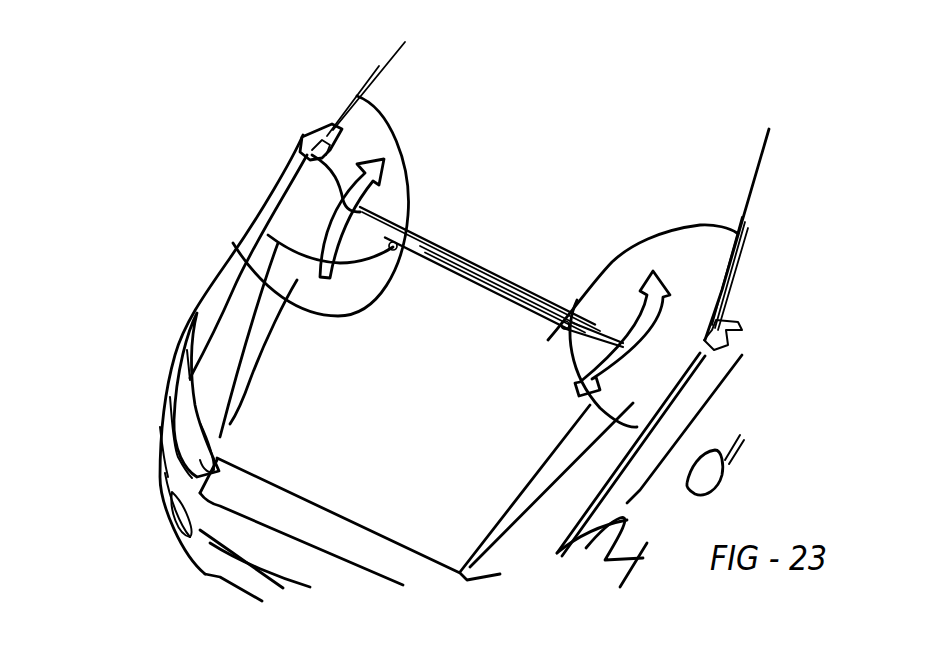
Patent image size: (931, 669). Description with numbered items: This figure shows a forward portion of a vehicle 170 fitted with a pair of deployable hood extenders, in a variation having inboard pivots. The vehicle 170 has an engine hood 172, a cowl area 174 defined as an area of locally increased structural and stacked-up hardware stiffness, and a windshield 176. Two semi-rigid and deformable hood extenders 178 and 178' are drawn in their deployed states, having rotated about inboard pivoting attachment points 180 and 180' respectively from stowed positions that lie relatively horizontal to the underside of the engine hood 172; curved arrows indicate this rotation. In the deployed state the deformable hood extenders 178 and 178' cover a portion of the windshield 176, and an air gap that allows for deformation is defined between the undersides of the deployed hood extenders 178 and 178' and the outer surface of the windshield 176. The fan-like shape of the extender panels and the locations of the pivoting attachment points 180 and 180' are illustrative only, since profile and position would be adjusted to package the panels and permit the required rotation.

The vehicle 170 is at (158, 299).
The engine hood 172 is at (343, 417).
The cowl area 174 is at (393, 192).
The windshield 176 is at (440, 98).
The hood extender 178 is at (320, 129).
The hood extender 178' is at (758, 283).
The inboard pivoting attachment point 180 is at (255, 206).
The inboard pivoting attachment point 180' is at (628, 423).